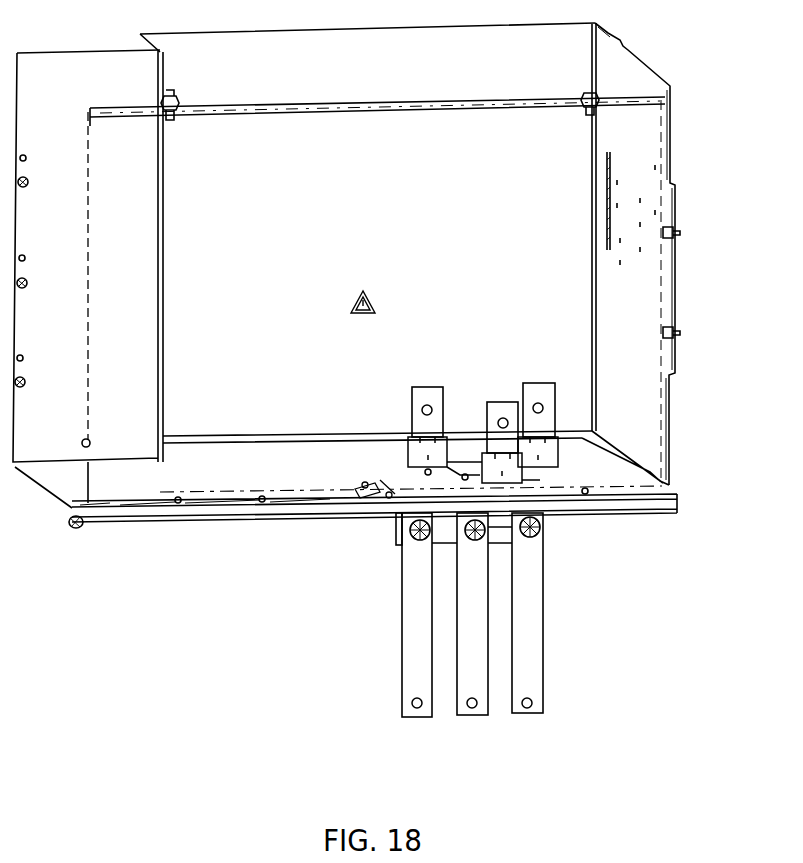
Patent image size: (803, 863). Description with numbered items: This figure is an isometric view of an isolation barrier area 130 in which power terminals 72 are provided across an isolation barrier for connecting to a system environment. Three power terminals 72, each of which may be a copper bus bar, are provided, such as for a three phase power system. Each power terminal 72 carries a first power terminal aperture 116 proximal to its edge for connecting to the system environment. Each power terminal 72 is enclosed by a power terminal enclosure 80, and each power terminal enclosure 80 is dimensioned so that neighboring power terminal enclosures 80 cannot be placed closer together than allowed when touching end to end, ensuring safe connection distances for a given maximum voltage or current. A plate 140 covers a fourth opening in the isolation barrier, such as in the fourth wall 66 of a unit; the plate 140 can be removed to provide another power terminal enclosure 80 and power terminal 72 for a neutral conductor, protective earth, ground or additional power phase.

The isolation barrier area 130 is at (527, 172).
The fourth wall 66 is at (260, 473).
The plate 140 is at (387, 492).
The power terminal enclosure 80 is at (558, 453).
The power terminal 72 is at (412, 417).
The first power terminal aperture 116 is at (427, 405).